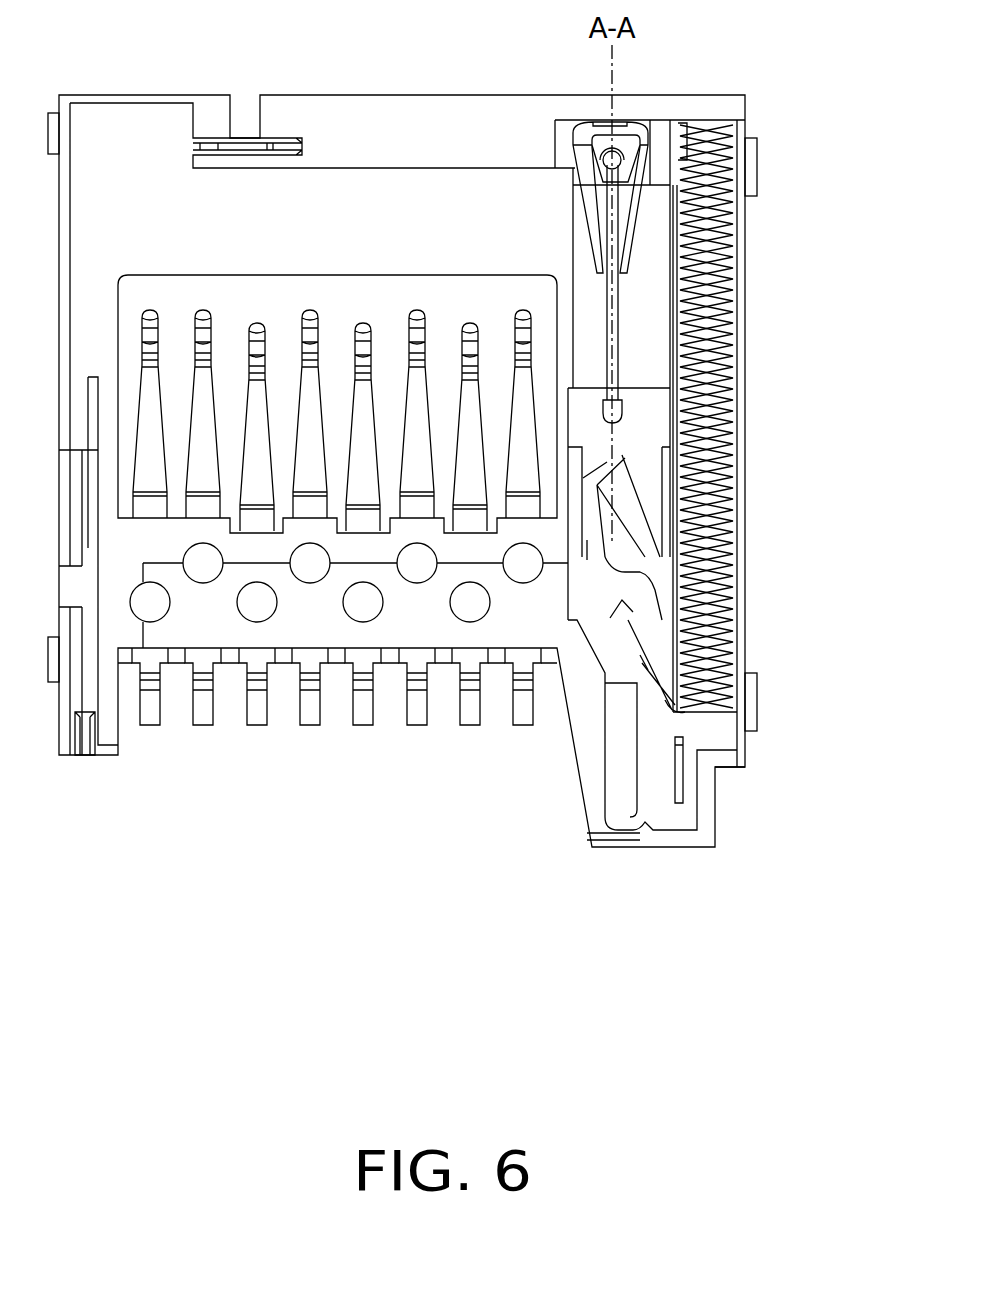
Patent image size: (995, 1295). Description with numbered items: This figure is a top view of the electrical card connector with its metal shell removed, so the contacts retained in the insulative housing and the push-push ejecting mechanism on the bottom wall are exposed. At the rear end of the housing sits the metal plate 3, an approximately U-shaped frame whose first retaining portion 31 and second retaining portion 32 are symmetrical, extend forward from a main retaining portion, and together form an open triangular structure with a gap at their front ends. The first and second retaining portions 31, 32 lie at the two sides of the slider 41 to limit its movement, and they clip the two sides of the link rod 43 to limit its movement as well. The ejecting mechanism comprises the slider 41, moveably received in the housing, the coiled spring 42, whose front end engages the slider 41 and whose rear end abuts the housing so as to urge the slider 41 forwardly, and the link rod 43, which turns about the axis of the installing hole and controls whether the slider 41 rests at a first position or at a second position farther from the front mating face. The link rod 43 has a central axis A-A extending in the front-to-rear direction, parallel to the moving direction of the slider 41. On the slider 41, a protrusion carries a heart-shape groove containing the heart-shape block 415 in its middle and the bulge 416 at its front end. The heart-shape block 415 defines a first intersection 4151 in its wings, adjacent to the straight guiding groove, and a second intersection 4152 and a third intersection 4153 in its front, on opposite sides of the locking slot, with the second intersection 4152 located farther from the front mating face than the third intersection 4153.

The metal plate 3 is at (598, 141).
The first retaining portion 31 is at (583, 220).
The second retaining portion 32 is at (678, 187).
The slider 41 is at (723, 617).
The coiled spring 42 is at (713, 243).
The link rod 43 is at (617, 325).
The heart-shape block 415 is at (731, 529).
The first intersection 4151 is at (620, 547).
The second intersection 4152 is at (622, 572).
The third intersection 4153 is at (627, 620).
The bulge 416 is at (642, 663).